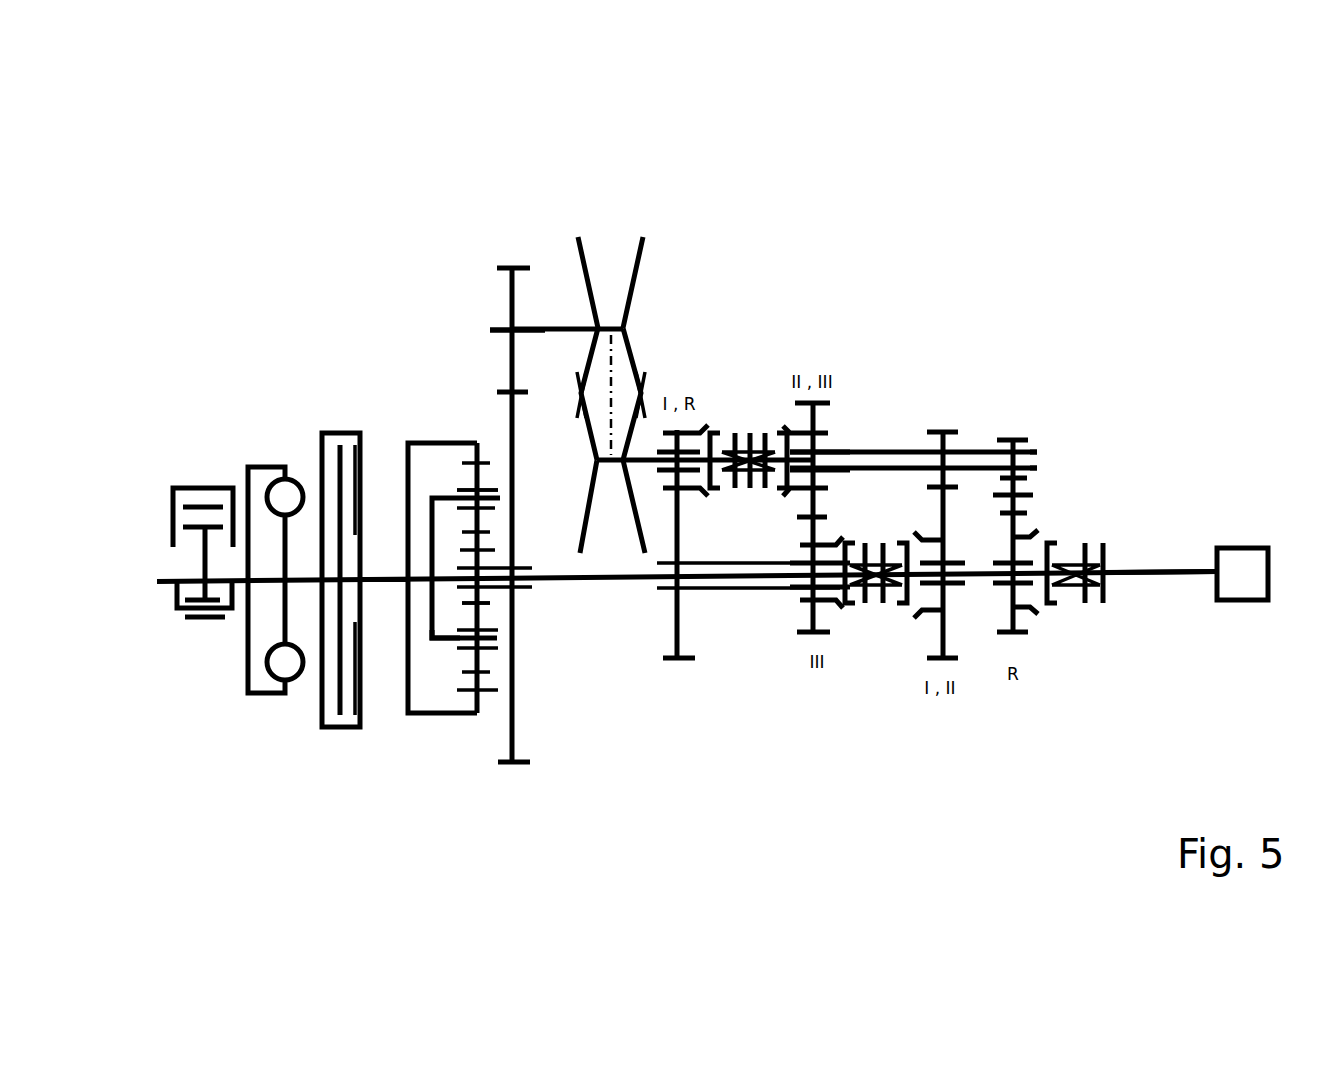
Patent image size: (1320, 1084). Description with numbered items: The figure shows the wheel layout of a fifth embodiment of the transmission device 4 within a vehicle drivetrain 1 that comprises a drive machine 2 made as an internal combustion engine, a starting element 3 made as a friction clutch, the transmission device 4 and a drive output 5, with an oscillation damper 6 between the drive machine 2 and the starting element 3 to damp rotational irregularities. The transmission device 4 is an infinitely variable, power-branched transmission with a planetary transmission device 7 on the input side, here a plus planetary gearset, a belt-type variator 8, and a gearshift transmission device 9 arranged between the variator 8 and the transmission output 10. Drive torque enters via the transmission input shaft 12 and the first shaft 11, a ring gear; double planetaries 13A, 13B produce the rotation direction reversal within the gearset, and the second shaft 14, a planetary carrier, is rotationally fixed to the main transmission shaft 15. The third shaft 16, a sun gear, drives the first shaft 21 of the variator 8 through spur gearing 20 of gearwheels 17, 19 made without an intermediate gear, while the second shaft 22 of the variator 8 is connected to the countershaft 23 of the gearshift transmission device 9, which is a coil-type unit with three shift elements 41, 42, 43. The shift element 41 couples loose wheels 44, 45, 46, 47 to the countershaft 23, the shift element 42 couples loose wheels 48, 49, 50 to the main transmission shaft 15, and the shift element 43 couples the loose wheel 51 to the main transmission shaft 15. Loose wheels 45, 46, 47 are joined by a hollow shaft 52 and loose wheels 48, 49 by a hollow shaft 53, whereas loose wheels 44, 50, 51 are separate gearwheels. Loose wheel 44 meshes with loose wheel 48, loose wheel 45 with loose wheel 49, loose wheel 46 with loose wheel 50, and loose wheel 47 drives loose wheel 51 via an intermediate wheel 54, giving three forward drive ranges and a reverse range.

The vehicle drivetrain 1 is at (308, 285).
The drive machine 2 is at (145, 480).
The starting element 3 is at (298, 431).
The transmission device 4 is at (713, 217).
The drive output 5 is at (1240, 572).
The oscillation damper 6 is at (232, 459).
The planetary transmission device 7 is at (471, 433).
The variator 8 is at (613, 242).
The gearshift transmission device 9 is at (1003, 411).
The transmission output 10 is at (1143, 572).
The first shaft 11 is at (475, 482).
The transmission input shaft 12 is at (392, 580).
The double planetary 13A is at (480, 620).
The double planetary 13B is at (430, 443).
The second shaft 14 is at (452, 640).
The main transmission shaft 15 is at (618, 580).
The third shaft 16 is at (472, 568).
The gearwheel 17 is at (517, 714).
The gearwheel 19 is at (511, 298).
The spur gearing 20 is at (482, 309).
The first shaft of the variator 21 is at (558, 326).
The second shaft of the variator 22 is at (647, 460).
The countershaft 23 is at (1039, 457).
The shift element 41 is at (659, 432).
The shift element 42 is at (881, 619).
The shift element 43 is at (1070, 613).
The loose wheel 44 is at (742, 412).
The loose wheel 45 is at (818, 402).
The loose wheel 46 is at (943, 430).
The loose wheel 47 is at (1018, 438).
The loose wheel 48 is at (681, 661).
The loose wheel 49 is at (816, 634).
The loose wheel 50 is at (943, 658).
The loose wheel 51 is at (1015, 635).
The hollow shaft 52 is at (904, 450).
The hollow shaft 53 is at (760, 590).
The intermediate wheel 54 is at (1032, 494).